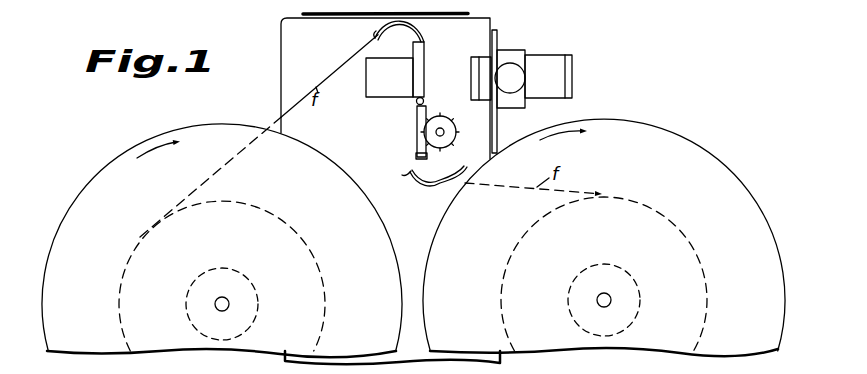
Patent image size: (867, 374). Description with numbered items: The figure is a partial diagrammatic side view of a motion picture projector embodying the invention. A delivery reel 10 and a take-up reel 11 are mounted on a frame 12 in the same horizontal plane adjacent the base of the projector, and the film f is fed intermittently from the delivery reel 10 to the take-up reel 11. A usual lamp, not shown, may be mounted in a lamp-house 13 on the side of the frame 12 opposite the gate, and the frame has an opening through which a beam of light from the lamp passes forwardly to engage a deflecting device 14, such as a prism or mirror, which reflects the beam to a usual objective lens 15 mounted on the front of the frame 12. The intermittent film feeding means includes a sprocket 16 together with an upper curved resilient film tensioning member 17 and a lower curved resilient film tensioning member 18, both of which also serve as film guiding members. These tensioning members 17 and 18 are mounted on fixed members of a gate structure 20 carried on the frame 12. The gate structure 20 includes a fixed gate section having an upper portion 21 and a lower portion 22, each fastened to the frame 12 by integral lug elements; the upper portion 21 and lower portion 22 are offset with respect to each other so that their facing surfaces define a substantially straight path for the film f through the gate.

The delivery reel 10 is at (381, 221).
The take-up reel 11 is at (693, 149).
The frame 12 is at (492, 27).
The lamp-house 13 is at (494, 14).
The deflecting device 14 is at (379, 91).
The objective lens 15 is at (558, 68).
The sprocket 16 is at (443, 115).
The upper curved resilient film tensioning member 17 is at (424, 24).
The lower curved resilient film tensioning member 18 is at (437, 185).
The gate structure 20 is at (409, 135).
The upper portion 21 is at (421, 63).
The lower portion 22 is at (416, 152).